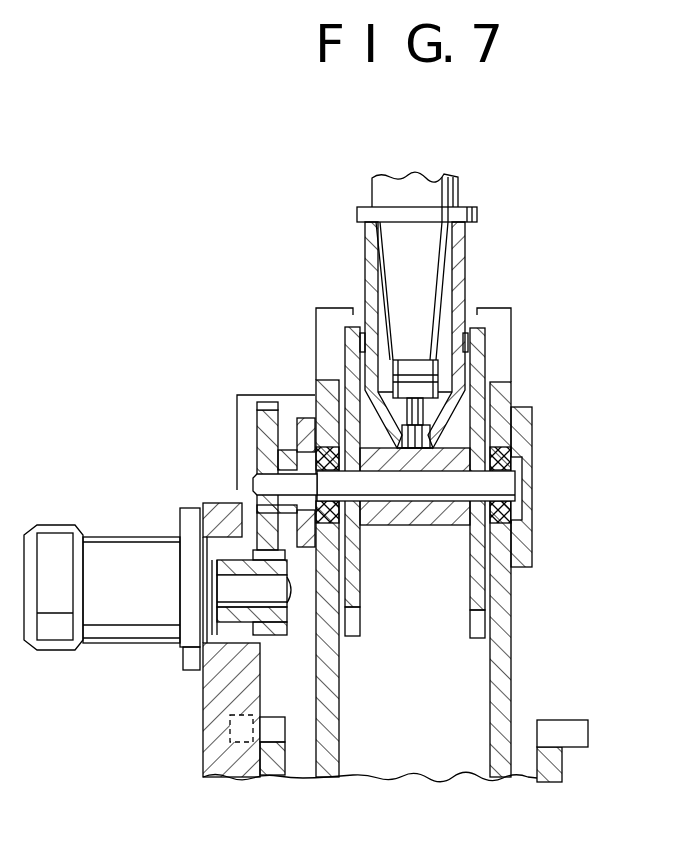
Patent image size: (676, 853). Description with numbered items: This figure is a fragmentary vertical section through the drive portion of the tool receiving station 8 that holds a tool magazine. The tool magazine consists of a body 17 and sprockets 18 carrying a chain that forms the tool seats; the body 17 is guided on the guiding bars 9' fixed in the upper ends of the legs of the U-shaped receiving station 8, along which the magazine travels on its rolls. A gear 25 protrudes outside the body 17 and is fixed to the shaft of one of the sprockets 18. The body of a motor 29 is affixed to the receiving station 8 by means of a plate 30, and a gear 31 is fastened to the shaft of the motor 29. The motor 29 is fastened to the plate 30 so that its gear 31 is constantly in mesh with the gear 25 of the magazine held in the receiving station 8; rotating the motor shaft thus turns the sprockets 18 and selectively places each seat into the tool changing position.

The receiving station 8 is at (565, 718).
The guiding bars 9' is at (595, 735).
The body 17 is at (503, 595).
The sprockets 18 is at (478, 372).
The gear 25 is at (267, 422).
The motor 29 is at (138, 633).
The plate 30 is at (225, 775).
The gear 31 is at (267, 613).